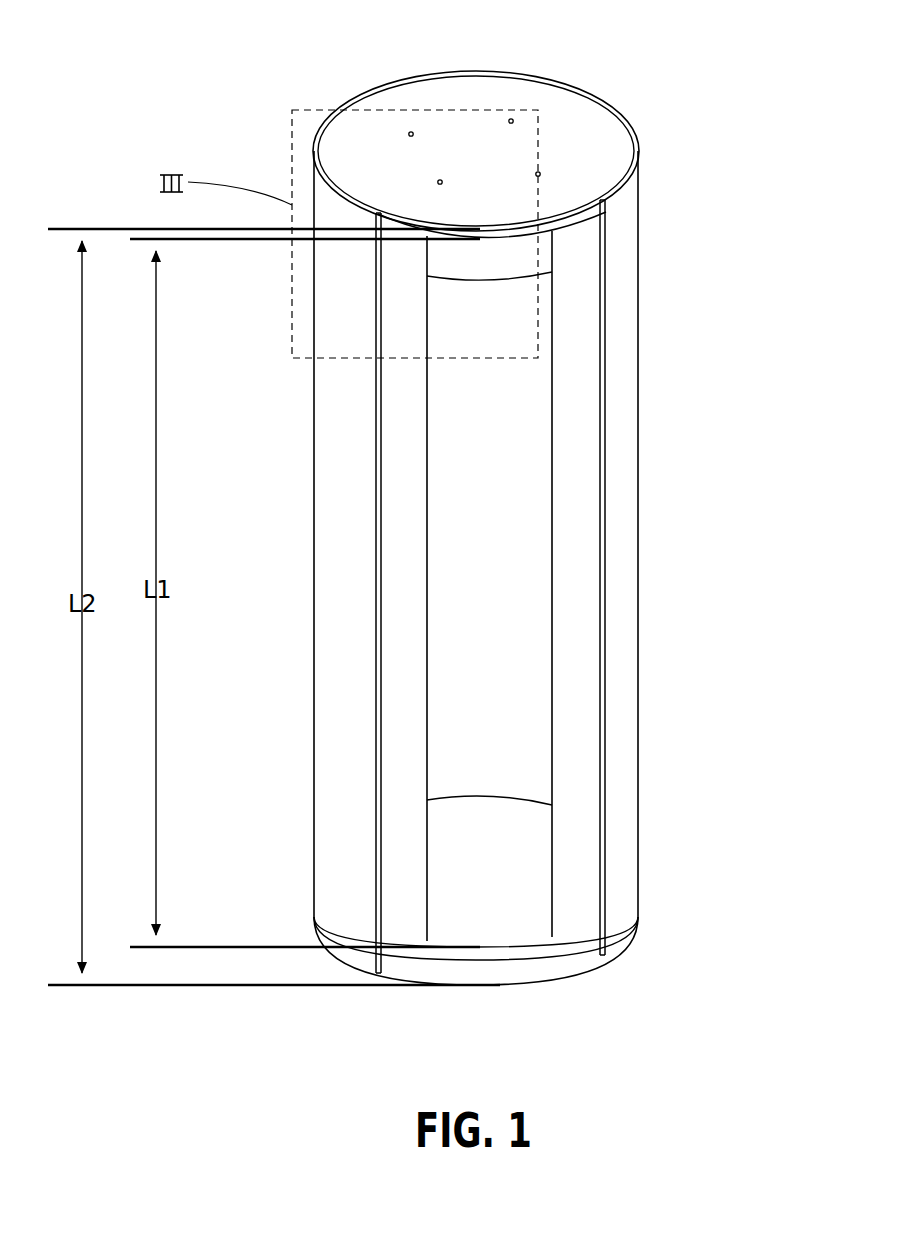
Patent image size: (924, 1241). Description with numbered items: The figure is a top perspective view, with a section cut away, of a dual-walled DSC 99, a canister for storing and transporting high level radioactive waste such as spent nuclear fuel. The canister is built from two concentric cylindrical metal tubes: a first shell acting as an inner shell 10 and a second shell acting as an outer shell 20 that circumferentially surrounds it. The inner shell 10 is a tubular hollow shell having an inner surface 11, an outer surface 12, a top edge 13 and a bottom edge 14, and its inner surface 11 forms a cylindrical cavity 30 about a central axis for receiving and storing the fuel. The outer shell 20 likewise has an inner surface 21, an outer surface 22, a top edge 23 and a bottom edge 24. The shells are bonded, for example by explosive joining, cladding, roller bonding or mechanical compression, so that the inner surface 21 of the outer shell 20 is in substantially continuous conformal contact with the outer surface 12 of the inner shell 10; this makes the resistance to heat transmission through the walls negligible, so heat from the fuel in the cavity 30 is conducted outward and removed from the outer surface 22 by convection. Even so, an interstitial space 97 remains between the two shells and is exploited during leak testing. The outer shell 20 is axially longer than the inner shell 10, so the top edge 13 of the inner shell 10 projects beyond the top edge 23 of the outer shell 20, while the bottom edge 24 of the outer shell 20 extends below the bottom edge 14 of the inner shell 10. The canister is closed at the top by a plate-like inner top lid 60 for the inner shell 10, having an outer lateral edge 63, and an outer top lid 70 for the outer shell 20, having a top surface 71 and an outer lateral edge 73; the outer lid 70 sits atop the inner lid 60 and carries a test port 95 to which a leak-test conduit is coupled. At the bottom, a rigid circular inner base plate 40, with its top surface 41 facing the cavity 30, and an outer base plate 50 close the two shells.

The inner shell 10 is at (468, 518).
The inner surface 11 is at (522, 440).
The outer surface 12 is at (400, 820).
The top edge 13 is at (593, 216).
The bottom edge 14 is at (577, 930).
The outer shell 20 is at (433, 534).
The inner surface 21 is at (319, 593).
The outer surface 22 is at (343, 632).
The top edge 23 is at (347, 108).
The bottom edge 24 is at (620, 948).
The cavity 30 is at (584, 586).
The inner base plate 40 is at (520, 959).
The top surface 41 is at (515, 890).
The outer base plate 50 is at (563, 968).
The inner top lid 60 is at (500, 243).
The outer lateral surface 63 is at (510, 263).
The outer top lid 70 is at (432, 162).
The top surface 71 is at (475, 85).
The outer lateral surface 73 is at (573, 220).
The test port 95 is at (393, 123).
The interstitial space 97 is at (598, 641).
The dual-walled DSC 99 is at (690, 155).